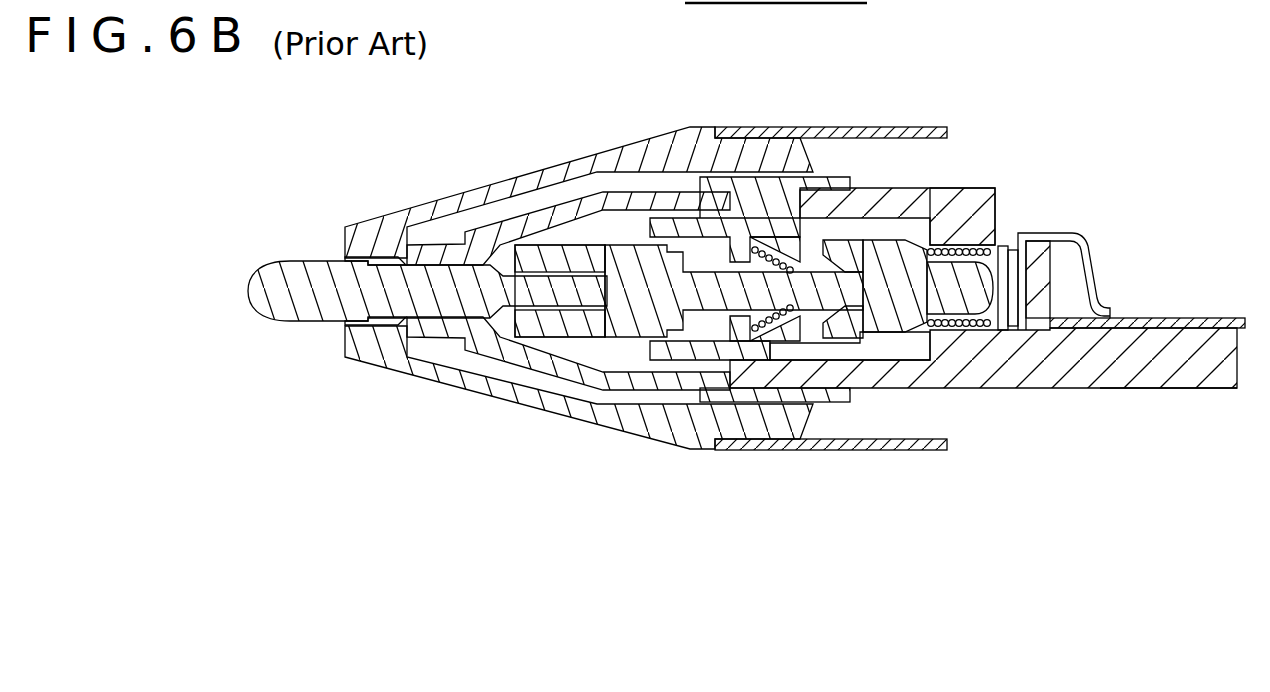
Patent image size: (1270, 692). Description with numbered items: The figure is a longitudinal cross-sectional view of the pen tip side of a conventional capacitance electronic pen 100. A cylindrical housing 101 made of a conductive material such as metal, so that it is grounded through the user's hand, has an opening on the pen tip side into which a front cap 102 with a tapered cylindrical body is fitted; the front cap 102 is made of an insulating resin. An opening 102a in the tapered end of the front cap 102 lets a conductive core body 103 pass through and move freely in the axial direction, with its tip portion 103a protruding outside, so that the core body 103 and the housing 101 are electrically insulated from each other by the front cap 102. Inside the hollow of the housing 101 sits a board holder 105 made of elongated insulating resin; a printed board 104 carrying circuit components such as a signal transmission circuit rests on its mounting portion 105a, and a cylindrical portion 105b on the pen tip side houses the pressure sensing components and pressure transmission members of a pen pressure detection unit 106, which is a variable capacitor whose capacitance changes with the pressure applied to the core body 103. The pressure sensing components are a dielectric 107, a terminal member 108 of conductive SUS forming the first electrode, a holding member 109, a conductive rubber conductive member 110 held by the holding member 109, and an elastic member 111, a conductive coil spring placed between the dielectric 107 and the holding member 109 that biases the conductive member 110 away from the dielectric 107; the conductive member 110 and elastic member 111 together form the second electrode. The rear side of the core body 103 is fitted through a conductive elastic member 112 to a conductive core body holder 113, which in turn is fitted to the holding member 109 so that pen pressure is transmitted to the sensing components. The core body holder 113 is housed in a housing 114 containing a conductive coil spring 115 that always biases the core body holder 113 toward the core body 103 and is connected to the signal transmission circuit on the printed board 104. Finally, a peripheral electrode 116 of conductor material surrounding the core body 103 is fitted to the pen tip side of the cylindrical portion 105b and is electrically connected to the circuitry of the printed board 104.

The electronic pen 100 is at (826, 118).
The housing 101 is at (931, 130).
The front cap 102 is at (548, 178).
The opening 102a is at (343, 259).
The core body 103 is at (378, 300).
The tip portion 103a is at (325, 325).
The printed board 104 is at (1163, 318).
The board holder 105 is at (1082, 367).
The mounting portion 105a is at (1165, 355).
The cylindrical portion 105b is at (958, 200).
The pen pressure detection unit 106 is at (882, 236).
The dielectric 107 is at (1003, 246).
The terminal member 108 is at (1058, 237).
The holding member 109 is at (885, 333).
The conductive member 110 is at (977, 300).
The elastic member 111 is at (953, 327).
The conductive elastic member 112 is at (562, 323).
The core body holder 113 is at (625, 253).
The housing 114 is at (743, 218).
The coil spring 115 is at (782, 258).
The peripheral electrode 116 is at (505, 228).